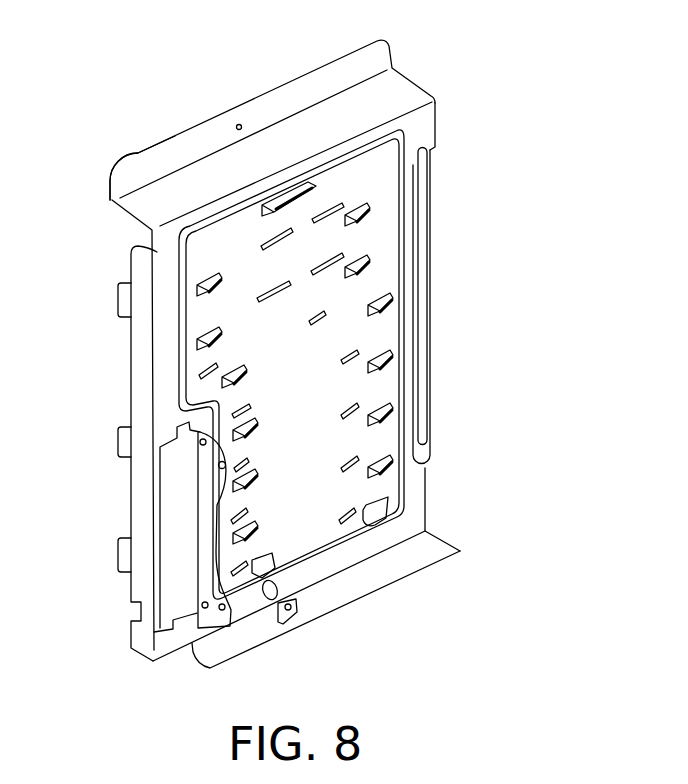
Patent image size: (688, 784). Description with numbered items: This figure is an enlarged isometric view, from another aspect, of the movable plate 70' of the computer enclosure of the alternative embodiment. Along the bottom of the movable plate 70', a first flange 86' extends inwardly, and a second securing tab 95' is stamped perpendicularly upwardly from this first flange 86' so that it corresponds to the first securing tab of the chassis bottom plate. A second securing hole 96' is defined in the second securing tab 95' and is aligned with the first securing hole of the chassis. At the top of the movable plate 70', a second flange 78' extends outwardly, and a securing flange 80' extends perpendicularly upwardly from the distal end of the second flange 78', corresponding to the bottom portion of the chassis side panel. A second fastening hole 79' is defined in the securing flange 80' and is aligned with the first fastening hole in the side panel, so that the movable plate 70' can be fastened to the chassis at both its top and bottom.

The movable plate 70' is at (324, 381).
The second flange 78' is at (118, 159).
The second fastening hole 79' is at (194, 97).
The securing flange 80' is at (272, 111).
The first flange 86' is at (355, 586).
The second securing tab 95' is at (322, 640).
The second securing hole 96' is at (338, 629).